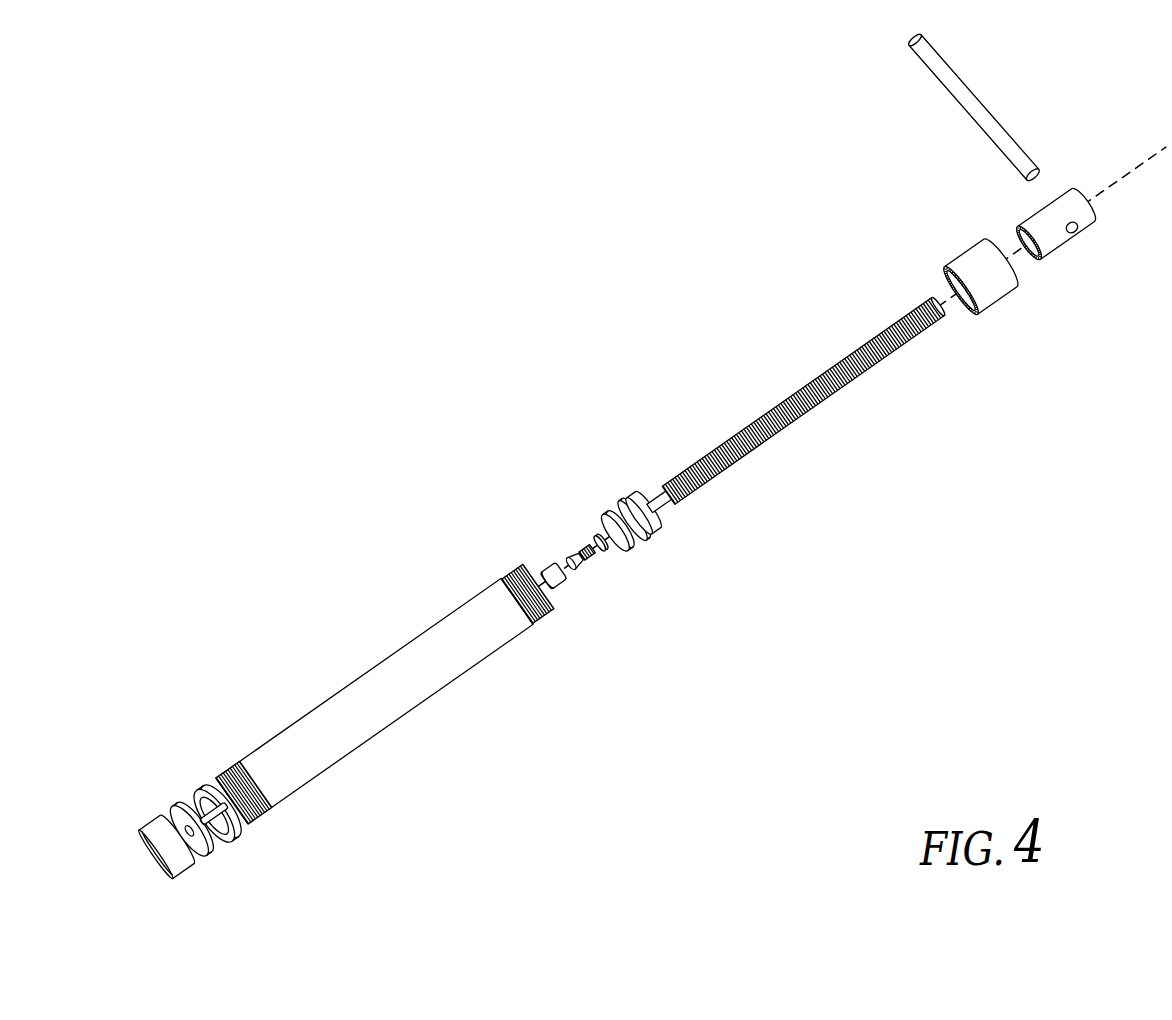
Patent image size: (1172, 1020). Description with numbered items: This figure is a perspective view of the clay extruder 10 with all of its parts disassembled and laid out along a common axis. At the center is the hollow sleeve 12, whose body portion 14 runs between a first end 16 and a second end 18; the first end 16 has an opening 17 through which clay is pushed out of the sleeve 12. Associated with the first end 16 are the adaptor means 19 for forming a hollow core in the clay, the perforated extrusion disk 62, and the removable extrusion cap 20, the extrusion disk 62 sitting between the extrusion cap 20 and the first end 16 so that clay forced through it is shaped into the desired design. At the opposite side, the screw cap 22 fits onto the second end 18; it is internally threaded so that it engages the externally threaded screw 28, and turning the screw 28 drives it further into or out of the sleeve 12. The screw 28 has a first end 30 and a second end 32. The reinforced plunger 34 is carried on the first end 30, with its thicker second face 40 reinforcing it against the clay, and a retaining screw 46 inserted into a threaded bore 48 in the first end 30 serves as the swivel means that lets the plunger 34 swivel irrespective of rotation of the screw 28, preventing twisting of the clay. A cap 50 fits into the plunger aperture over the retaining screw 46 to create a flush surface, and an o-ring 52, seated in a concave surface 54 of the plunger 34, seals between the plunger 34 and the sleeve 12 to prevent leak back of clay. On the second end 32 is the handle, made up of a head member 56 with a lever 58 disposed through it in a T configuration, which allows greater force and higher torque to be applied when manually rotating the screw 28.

The clay extruder 10 is at (543, 758).
The hollow sleeve 12 is at (385, 660).
The body portion 14 is at (382, 702).
The first end 16 is at (217, 773).
The opening 17 is at (199, 784).
The second end 18 is at (503, 574).
The adaptor means 19 is at (237, 833).
The extrusion cap 20 is at (143, 813).
The screw cap 22 is at (988, 315).
The screw 28 is at (757, 447).
The screw first end 30 is at (658, 493).
The screw second end 32 is at (940, 317).
The reinforced plunger 34 is at (630, 495).
The second face 40 is at (600, 560).
The retaining screw 46 is at (570, 558).
The threaded bore 48 is at (630, 493).
The cap 50 is at (545, 567).
The o-ring 52 is at (597, 535).
The concave surface 54 is at (608, 512).
The head member 56 is at (1080, 190).
The handle rod 58 is at (947, 92).
The extrusion disk 62 is at (217, 855).